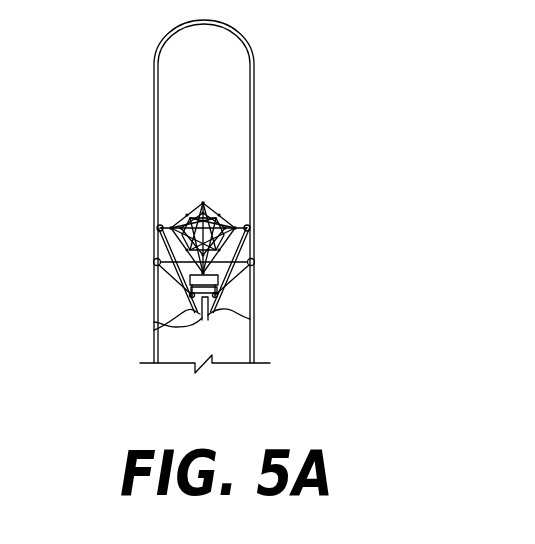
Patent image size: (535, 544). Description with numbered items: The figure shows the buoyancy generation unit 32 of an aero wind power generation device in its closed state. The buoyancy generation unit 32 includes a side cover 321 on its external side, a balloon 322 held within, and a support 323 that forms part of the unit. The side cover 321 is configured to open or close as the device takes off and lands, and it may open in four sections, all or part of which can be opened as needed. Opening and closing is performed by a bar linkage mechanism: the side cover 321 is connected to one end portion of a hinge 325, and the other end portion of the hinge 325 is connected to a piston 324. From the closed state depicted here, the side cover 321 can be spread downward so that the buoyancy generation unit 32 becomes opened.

The buoyancy generation unit 32 is at (334, 116).
The side cover 321 is at (154, 128).
The balloon 322 is at (235, 222).
The support 323 is at (220, 279).
The piston 324 is at (154, 331).
The hinge 325 is at (253, 243).